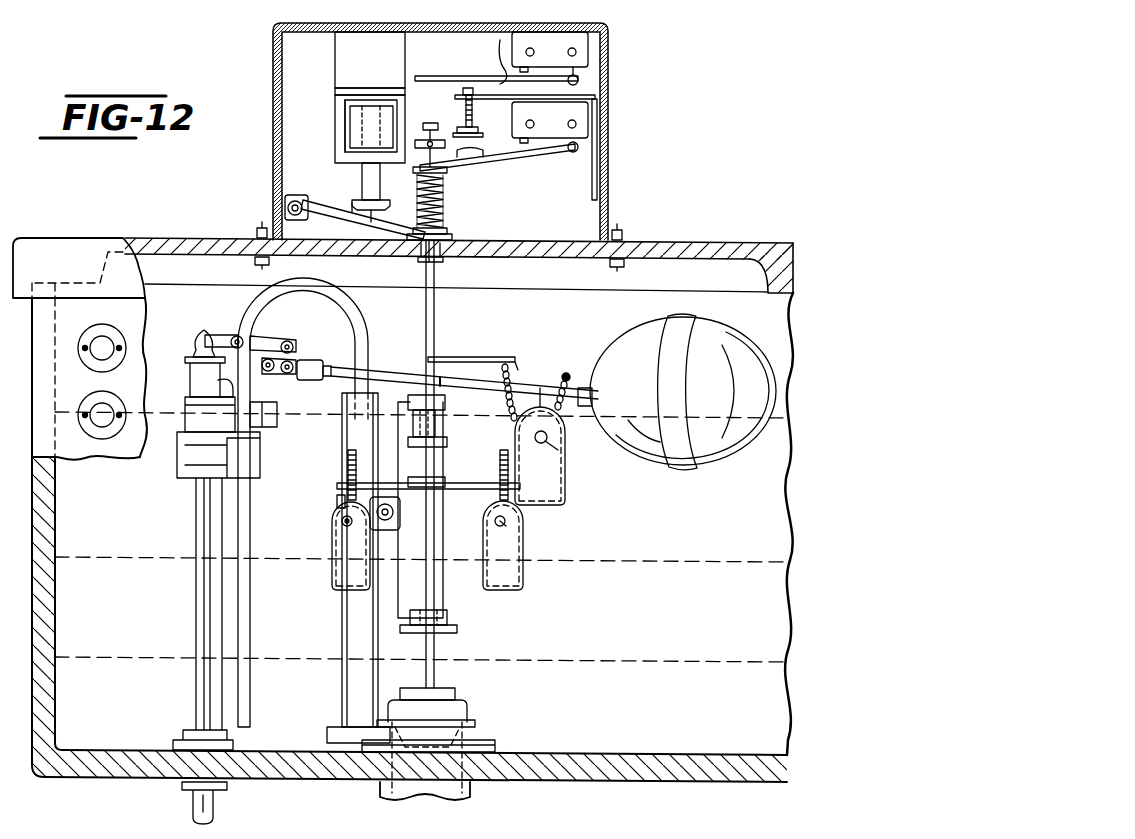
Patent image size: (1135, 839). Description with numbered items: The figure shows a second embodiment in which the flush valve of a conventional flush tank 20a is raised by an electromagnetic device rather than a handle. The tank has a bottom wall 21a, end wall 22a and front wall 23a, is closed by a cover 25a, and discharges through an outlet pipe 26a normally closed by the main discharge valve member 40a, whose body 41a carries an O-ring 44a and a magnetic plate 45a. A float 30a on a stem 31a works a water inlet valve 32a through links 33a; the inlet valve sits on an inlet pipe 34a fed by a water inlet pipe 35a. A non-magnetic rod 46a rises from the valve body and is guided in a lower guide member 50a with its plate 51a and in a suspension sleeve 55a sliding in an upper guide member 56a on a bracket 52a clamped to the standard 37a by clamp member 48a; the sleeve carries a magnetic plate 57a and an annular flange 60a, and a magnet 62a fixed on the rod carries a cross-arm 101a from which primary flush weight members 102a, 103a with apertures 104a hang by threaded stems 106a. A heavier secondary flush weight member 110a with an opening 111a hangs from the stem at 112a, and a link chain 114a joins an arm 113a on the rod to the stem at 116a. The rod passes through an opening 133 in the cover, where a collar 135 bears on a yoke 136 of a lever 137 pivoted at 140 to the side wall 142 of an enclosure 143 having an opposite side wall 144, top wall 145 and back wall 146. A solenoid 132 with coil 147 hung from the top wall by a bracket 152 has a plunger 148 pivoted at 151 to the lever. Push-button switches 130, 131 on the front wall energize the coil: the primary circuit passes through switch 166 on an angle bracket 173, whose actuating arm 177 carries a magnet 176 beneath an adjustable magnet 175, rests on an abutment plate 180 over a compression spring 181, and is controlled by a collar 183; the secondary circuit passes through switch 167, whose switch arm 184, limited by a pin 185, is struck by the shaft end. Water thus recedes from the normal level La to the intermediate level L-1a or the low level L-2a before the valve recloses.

The flush tank 20a is at (522, 784).
The bottom wall 21a is at (620, 785).
The end wall 22a is at (55, 530).
The front wall 23a is at (70, 460).
The cover 25a is at (712, 242).
The outlet pipe 26a is at (472, 737).
The float 30a is at (652, 390).
The stem 31a is at (385, 370).
The water inlet valve 32a is at (207, 330).
The links 33a is at (262, 340).
The inlet pipe 34a is at (197, 518).
The water inlet pipe 35a is at (195, 800).
The standard 37a is at (343, 640).
The main discharge valve member 40a is at (478, 709).
The body 41a is at (468, 703).
The O-ring 44a is at (438, 722).
The metallic plate 45a is at (445, 690).
The rod 46a is at (436, 313).
The clamp member 48a is at (340, 502).
The guide member 50a is at (447, 614).
The metallic plate 51a is at (457, 629).
The bracket 52a is at (402, 523).
The suspension sleeve 55a is at (440, 425).
The upper guide member 56a is at (447, 400).
The metallic plate 57a is at (447, 443).
The annular flange 60a is at (447, 383).
The metallic plate 62a is at (440, 484).
The cross-arm 101a is at (476, 486).
The primary flush weight member 102a is at (520, 556).
The primary flush weight member 103a is at (335, 572).
The apertures 104a is at (341, 521).
The threaded stem 106a is at (348, 466).
The secondary flush weight member 110a is at (562, 479).
The opening 111a is at (558, 450).
The suspension point 112a is at (548, 440).
The arm 113a is at (498, 358).
The link chain 114a is at (514, 370).
The connection point 116a is at (598, 374).
The primary flushing switch 130 is at (100, 410).
The secondary flush push-button switch 131 is at (100, 344).
The solenoid 132 is at (340, 130).
The opening 133 is at (442, 260).
The collar 135 is at (448, 236).
The yoke 136 is at (420, 257).
The lever 137 is at (336, 216).
The pivot 140 is at (284, 193).
The side wall 142 is at (275, 165).
The enclosure 143 is at (464, 124).
The side wall 144 is at (608, 163).
The top wall 145 is at (300, 24).
The back wall 146 is at (560, 226).
The coil 147 is at (348, 116).
The solenoid plunger 148 is at (368, 178).
The pivotal connection 151 is at (351, 206).
The bracket 152 is at (383, 62).
The switch 166 is at (568, 134).
The switch 167 is at (568, 61).
The angle bracket 173 is at (603, 97).
The metallic plate 175 is at (485, 127).
The metallic plate 176 is at (456, 160).
The switch actuating arm 177 is at (518, 158).
The abutment plate 180 is at (446, 172).
The compression spring 181 is at (446, 190).
The collar 183 is at (416, 133).
The switch arm 184 is at (448, 77).
The pin 185 is at (497, 57).
The normal level La is at (727, 411).
The intermediate level L-1a is at (698, 560).
The low level L-2a is at (698, 660).